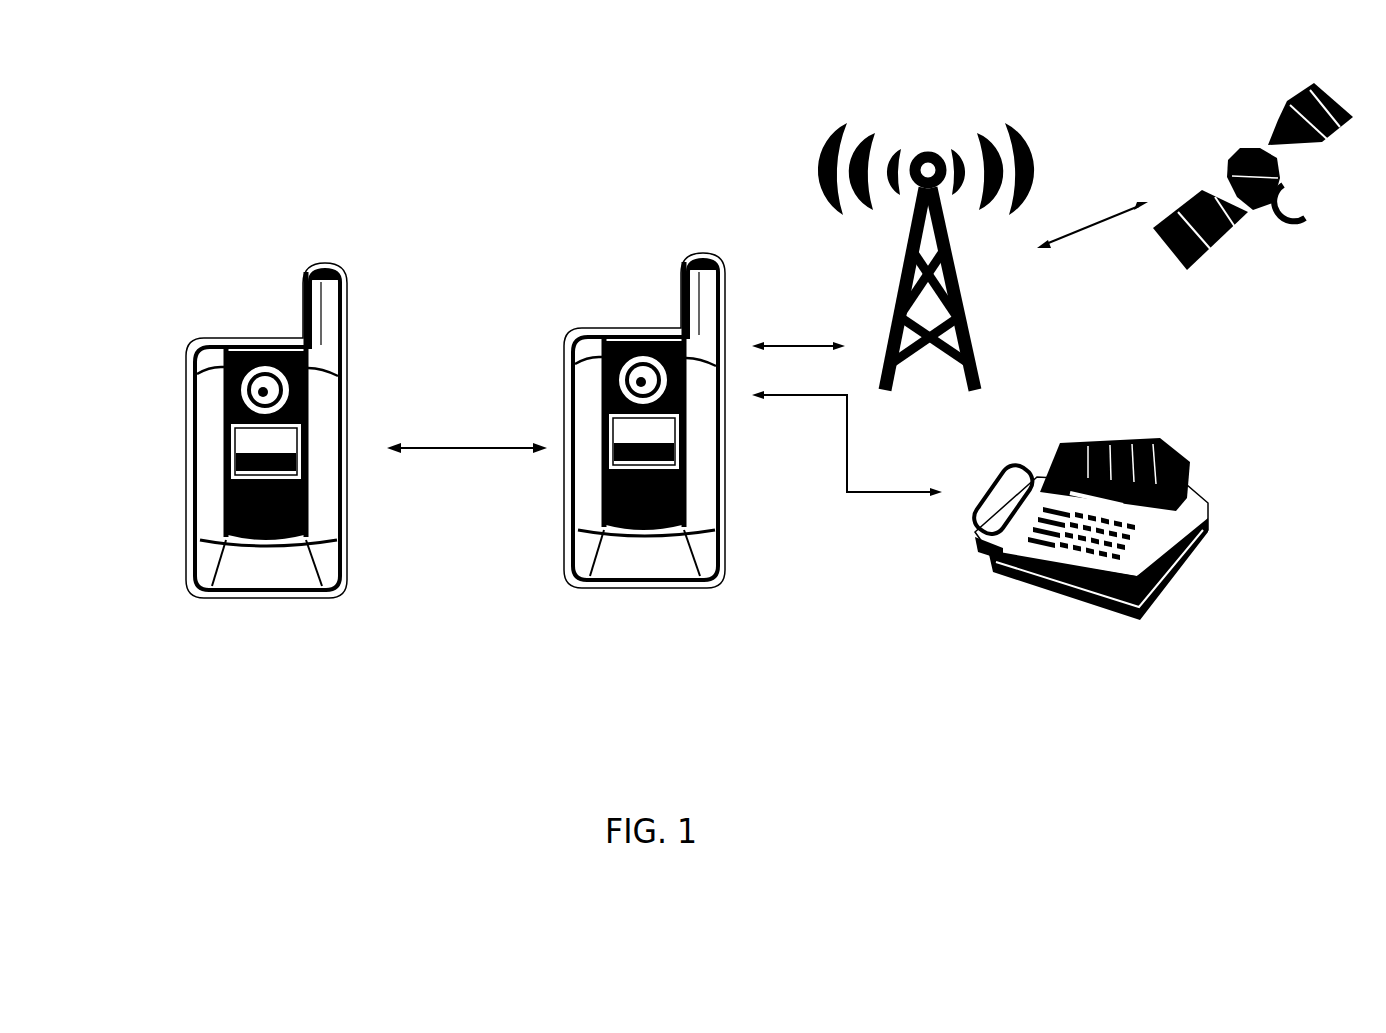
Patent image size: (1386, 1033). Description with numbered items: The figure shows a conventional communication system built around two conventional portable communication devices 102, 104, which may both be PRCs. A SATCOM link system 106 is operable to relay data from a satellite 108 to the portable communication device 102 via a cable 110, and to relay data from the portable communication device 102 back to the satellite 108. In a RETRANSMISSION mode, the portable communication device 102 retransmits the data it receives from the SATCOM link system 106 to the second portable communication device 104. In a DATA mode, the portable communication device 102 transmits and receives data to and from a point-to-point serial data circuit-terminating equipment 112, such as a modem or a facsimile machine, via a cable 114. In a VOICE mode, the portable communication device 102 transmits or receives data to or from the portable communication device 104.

The portable communication device 102 is at (650, 613).
The portable communication device 104 is at (263, 625).
The SATCOM link system 106 is at (797, 138).
The satellite 108 is at (1217, 115).
The cable 110 is at (787, 323).
The data circuit-terminating equipment 112 is at (1093, 612).
The cable 114 is at (847, 497).